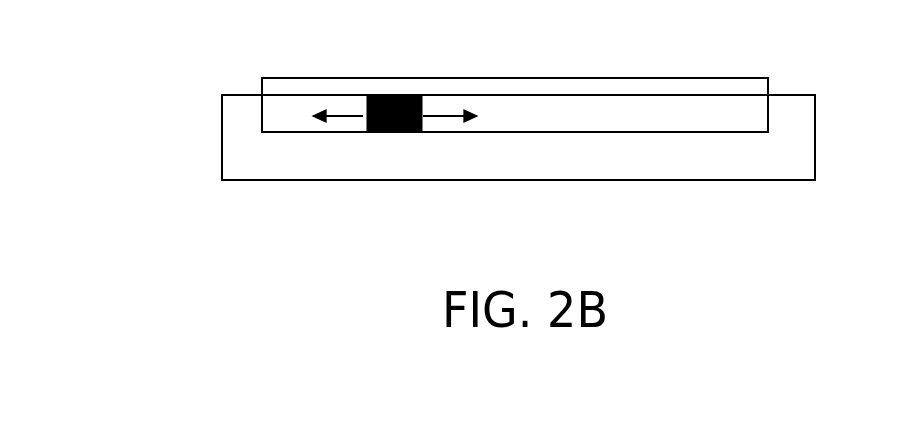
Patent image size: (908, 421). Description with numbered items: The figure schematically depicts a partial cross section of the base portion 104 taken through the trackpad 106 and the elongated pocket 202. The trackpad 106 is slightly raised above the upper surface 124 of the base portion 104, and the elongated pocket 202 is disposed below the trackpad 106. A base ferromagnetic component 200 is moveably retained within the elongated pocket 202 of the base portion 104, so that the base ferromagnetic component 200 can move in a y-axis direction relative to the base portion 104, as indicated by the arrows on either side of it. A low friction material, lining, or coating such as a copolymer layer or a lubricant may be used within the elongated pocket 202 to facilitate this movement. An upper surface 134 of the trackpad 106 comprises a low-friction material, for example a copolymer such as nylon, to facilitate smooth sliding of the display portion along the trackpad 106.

The base portion 104 is at (373, 182).
The trackpad 106 is at (262, 90).
The upper surface 124 is at (785, 95).
The upper surface 134 is at (618, 78).
The base ferromagnetic component 200 is at (392, 94).
The elongated pocket 202 is at (770, 113).